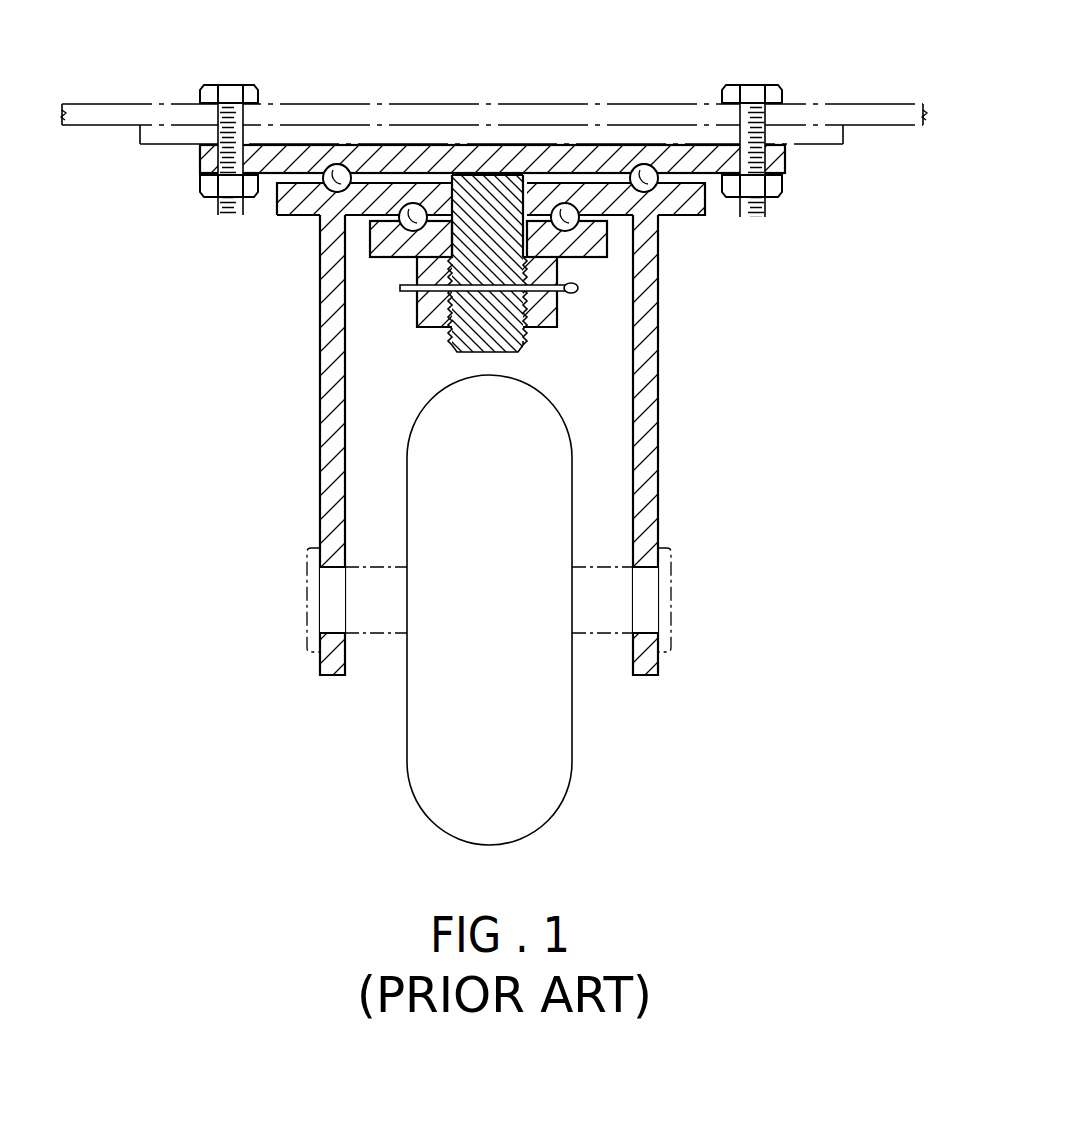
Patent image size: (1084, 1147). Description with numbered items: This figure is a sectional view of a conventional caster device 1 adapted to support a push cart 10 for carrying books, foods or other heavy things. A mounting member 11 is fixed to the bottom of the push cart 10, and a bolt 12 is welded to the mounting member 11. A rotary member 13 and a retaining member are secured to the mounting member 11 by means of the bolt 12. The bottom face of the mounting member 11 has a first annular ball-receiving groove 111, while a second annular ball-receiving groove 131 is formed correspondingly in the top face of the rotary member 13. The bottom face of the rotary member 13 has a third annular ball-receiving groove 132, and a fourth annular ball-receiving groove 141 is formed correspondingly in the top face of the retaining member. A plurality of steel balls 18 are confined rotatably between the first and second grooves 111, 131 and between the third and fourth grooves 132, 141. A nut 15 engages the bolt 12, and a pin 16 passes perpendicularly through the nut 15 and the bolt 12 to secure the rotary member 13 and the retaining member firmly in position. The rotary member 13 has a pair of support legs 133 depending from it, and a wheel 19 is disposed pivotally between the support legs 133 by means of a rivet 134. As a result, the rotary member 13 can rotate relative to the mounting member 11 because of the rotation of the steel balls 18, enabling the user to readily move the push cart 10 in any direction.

The caster device 1 is at (668, 388).
The push cart 10 is at (807, 112).
The mounting member 11 is at (776, 164).
The first annular ball-receiving groove 111 is at (347, 166).
The bolt 12 is at (526, 299).
The rotary member 13 is at (509, 429).
The second annular ball-receiving groove 131 is at (298, 218).
The third annular ball-receiving groove 132 is at (410, 205).
The support legs 133 is at (327, 476).
The rivet 134 is at (665, 595).
The fourth annular ball-receiving groove 141 is at (400, 291).
The nut 15 is at (541, 336).
The pin 16 is at (416, 300).
The steel balls 18 is at (325, 168).
The wheel 19 is at (560, 748).